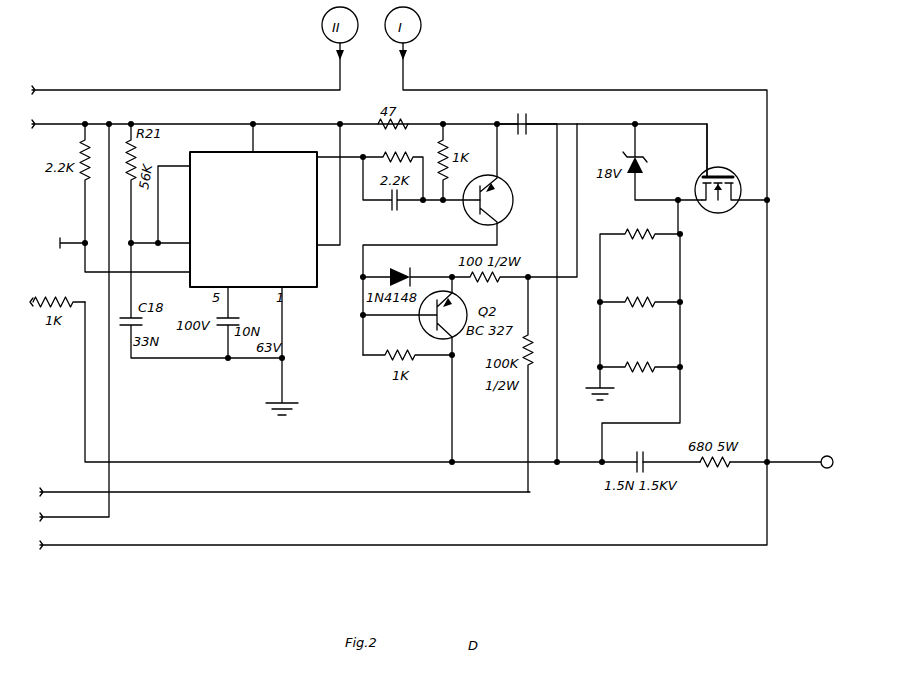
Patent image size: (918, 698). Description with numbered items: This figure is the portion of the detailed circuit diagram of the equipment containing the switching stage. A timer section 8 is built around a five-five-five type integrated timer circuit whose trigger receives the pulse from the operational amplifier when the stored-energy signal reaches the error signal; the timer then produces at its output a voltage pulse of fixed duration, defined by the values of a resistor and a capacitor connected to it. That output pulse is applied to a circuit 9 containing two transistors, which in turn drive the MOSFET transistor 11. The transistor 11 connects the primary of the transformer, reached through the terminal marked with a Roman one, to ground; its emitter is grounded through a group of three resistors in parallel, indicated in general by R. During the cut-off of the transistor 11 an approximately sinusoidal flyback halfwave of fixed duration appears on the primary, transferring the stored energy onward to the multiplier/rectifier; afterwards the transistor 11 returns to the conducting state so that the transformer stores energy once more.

The timer circuit 8 is at (201, 150).
The transistor driver circuit 9 is at (538, 164).
The MOSFET transistor 11 is at (727, 170).
The group of three resistors in parallel R is at (700, 323).